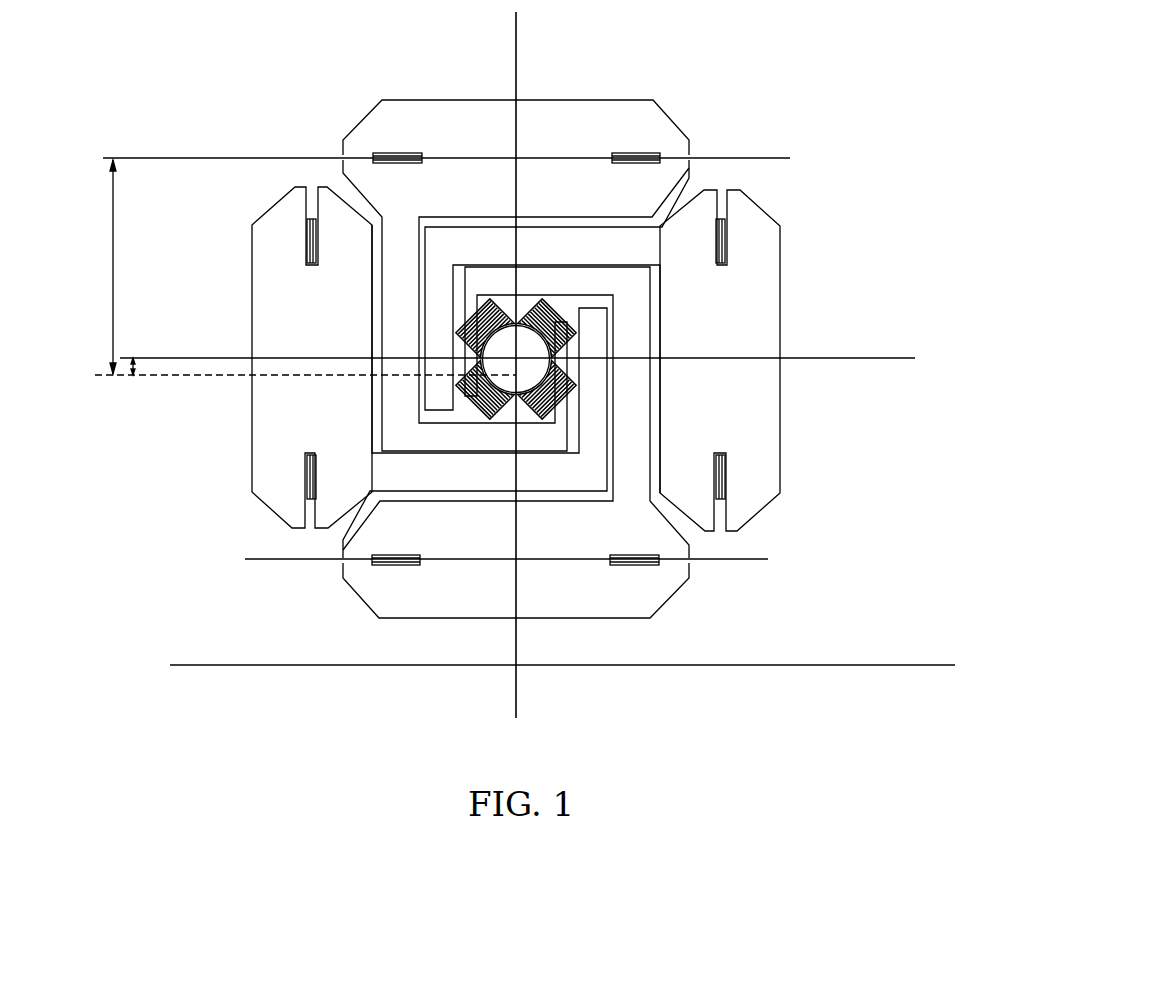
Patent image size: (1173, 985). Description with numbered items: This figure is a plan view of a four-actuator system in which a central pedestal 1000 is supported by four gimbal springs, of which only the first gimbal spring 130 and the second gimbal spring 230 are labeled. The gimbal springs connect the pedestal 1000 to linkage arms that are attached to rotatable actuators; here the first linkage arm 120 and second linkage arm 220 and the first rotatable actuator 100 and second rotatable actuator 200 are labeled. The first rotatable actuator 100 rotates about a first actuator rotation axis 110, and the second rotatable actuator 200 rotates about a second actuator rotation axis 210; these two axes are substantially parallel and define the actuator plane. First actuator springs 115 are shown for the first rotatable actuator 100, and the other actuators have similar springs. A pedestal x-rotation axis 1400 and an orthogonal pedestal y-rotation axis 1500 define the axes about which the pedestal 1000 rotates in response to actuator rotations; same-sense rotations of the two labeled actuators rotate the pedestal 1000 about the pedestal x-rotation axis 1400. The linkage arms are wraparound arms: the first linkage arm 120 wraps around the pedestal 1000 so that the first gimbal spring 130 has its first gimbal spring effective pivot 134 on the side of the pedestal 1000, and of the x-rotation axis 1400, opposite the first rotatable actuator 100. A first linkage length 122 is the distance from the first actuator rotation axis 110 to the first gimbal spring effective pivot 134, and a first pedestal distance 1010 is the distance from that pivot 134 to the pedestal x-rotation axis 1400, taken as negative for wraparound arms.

The first rotatable actuator 100 is at (658, 110).
The first actuator rotation axis 110 is at (760, 158).
The first actuator springs 115 is at (373, 158).
The first linkage arm 120 is at (389, 238).
The first linkage length 122 is at (113, 237).
The first gimbal spring 130 is at (550, 413).
The first gimbal spring effective pivot 134 is at (493, 378).
The second rotatable actuator 200 is at (675, 578).
The second actuator rotation axis 210 is at (768, 562).
The second linkage arm 220 is at (642, 458).
The second gimbal spring 230 is at (477, 306).
The pedestal 1000 is at (543, 347).
The first pedestal distance 1010 is at (135, 368).
The pedestal x-rotation axis 1400 is at (858, 361).
The pedestal y-rotation axis 1500 is at (516, 23).